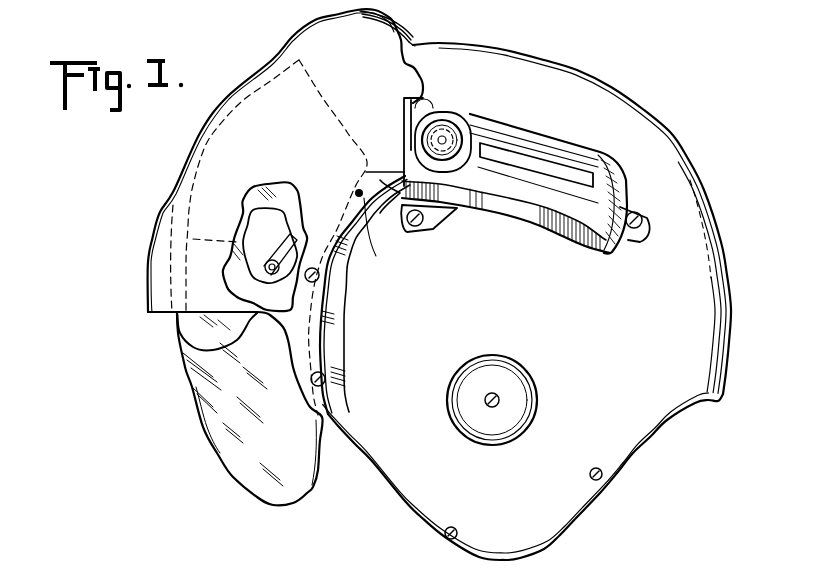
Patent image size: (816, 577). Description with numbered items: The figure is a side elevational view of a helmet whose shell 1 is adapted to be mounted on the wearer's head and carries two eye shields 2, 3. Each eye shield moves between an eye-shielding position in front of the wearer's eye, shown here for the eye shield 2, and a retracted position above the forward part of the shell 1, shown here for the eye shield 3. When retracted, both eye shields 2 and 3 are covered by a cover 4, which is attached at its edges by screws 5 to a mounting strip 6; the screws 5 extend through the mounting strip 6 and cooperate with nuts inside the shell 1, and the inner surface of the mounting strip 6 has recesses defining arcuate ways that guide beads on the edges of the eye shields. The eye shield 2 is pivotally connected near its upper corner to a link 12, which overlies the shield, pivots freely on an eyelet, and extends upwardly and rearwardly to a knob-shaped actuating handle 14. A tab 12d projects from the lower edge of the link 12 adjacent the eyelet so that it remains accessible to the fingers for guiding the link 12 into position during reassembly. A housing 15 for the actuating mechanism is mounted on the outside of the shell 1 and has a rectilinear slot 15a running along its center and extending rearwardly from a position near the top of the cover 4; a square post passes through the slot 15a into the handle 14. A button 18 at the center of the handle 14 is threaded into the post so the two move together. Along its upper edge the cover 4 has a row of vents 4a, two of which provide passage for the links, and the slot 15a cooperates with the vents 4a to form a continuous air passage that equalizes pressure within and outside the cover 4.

The shell 1 is at (715, 307).
The eye shield 2 is at (207, 407).
The eye shield 3 is at (203, 323).
The cover 4 is at (322, 40).
The vents 4a is at (410, 43).
The screws 5 is at (320, 275).
The mounting strip 6 is at (334, 388).
The link 12 is at (243, 213).
The tab 12d is at (240, 270).
The actuating handle 14 is at (472, 112).
The housing 15 is at (594, 151).
The slot 15a is at (553, 166).
The button 18 is at (443, 126).